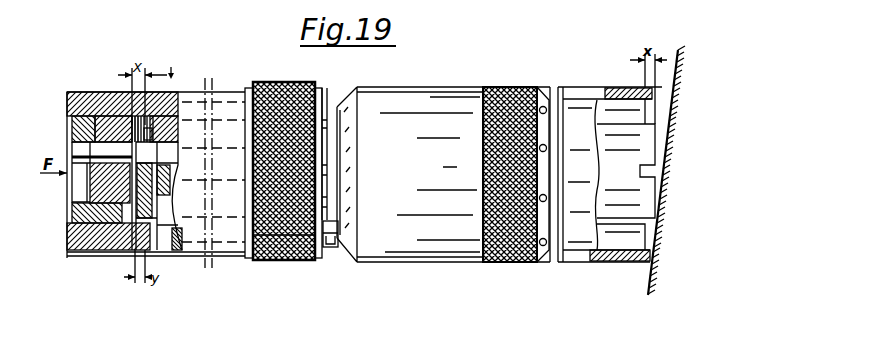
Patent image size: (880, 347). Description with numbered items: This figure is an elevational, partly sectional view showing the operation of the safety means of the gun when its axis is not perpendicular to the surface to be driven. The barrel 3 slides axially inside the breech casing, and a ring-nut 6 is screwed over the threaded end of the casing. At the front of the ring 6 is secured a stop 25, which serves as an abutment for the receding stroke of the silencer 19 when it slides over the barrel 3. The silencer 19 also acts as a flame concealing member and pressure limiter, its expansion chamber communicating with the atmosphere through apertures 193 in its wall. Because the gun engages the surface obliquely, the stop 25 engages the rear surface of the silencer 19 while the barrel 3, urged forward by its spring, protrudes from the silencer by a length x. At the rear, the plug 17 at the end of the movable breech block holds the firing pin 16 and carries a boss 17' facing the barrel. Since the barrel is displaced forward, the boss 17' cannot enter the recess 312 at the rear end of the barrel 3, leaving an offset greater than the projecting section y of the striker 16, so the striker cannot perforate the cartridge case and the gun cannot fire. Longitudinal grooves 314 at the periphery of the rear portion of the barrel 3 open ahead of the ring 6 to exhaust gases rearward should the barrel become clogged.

The firing pin 16 is at (100, 245).
The plug 17 is at (102, 205).
The boss 17' is at (112, 103).
The recess 312 is at (146, 125).
The longitudinal grooves 314 is at (168, 125).
The barrel 3 is at (176, 250).
The ring-nut 6 is at (294, 261).
The stop 25 is at (331, 249).
The silencer 19 is at (432, 122).
The apertures 193 is at (546, 106).